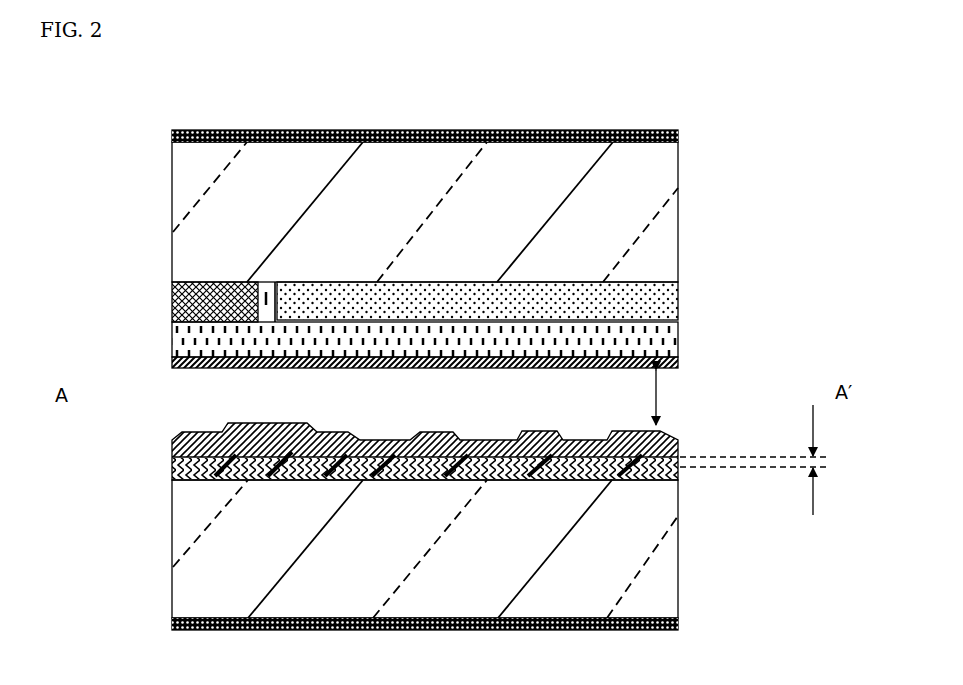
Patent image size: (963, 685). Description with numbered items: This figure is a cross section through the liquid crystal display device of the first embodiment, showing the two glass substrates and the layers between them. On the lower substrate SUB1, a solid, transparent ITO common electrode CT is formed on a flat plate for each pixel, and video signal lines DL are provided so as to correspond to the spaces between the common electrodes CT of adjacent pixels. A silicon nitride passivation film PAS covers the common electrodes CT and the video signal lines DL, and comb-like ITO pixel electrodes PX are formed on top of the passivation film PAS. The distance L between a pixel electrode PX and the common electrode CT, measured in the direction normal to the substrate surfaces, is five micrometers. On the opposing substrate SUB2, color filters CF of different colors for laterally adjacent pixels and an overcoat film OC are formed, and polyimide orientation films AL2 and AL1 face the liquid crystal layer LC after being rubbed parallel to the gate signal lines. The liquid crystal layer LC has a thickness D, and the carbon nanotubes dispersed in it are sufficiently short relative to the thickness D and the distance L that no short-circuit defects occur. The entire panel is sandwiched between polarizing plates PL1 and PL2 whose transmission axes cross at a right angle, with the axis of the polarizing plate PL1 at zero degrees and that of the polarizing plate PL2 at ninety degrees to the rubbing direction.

The polarizing plate PL2 is at (172, 133).
The substrate SUB2 is at (186, 201).
The color filter CF is at (178, 306).
The overcoat film OC is at (660, 335).
The orientation film AL2 is at (680, 366).
The liquid crystal layer LC is at (186, 374).
The thickness of the liquid crystal layer D is at (628, 397).
The orientation film AL1 is at (680, 446).
The passivation film PAS is at (172, 462).
The pixel electrode PX is at (437, 480).
The common electrode CT is at (203, 480).
The distance between the pixel electrode and the common electrode L is at (756, 460).
The substrate SUB1 is at (186, 566).
The polarizing plate PL1 is at (172, 630).
The video signal line DL is at (267, 480).